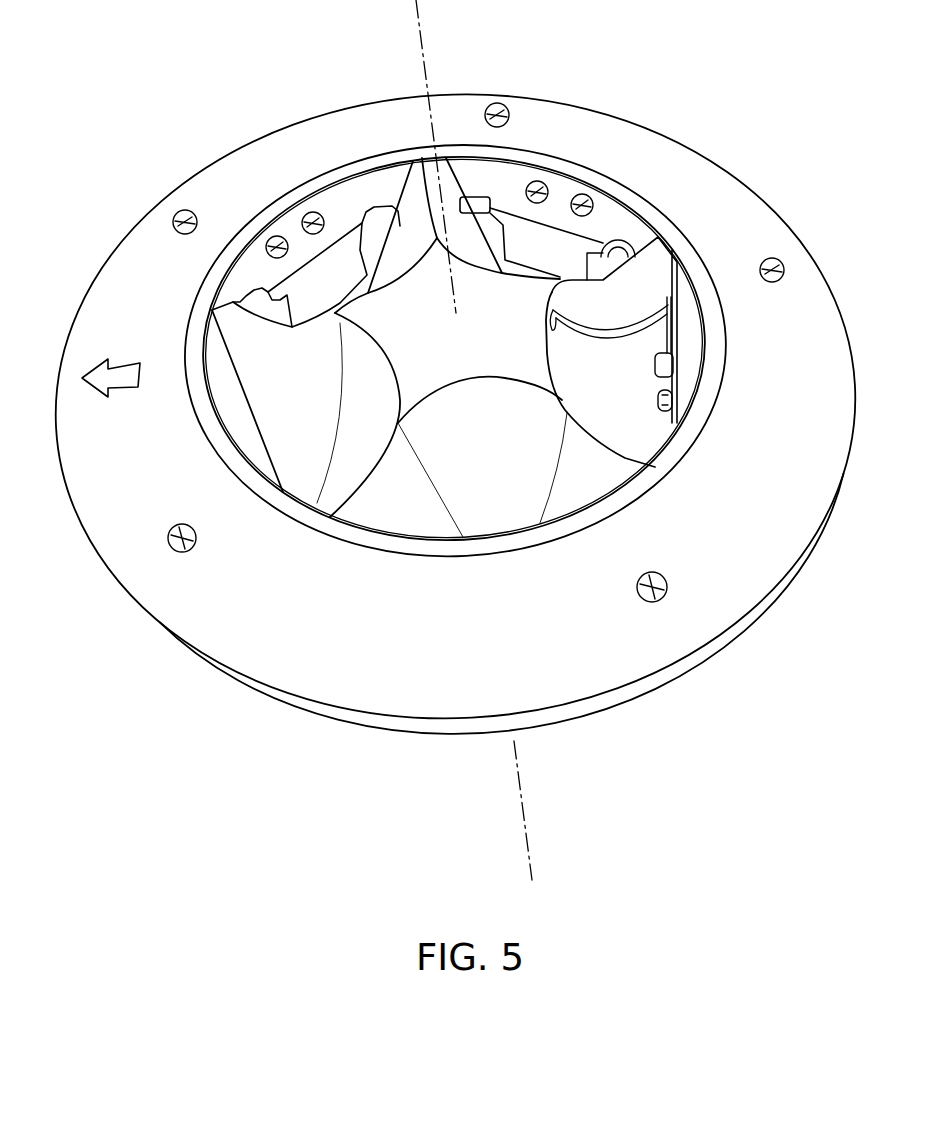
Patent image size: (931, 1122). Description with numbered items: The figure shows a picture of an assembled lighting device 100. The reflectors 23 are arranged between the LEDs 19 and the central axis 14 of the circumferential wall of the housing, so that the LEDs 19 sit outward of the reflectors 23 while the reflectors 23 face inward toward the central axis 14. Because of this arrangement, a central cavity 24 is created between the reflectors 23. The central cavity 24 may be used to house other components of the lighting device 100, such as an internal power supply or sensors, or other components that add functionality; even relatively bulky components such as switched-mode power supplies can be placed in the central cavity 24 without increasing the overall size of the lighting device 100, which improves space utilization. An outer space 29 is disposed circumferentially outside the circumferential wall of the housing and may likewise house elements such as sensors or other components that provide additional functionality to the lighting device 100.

The lighting device 100 is at (116, 133).
The central axis 14 is at (422, 42).
The outer space 29 is at (607, 124).
The central cavity 24 is at (437, 341).
The reflectors 23 is at (557, 364).
The LEDs 19 is at (658, 399).